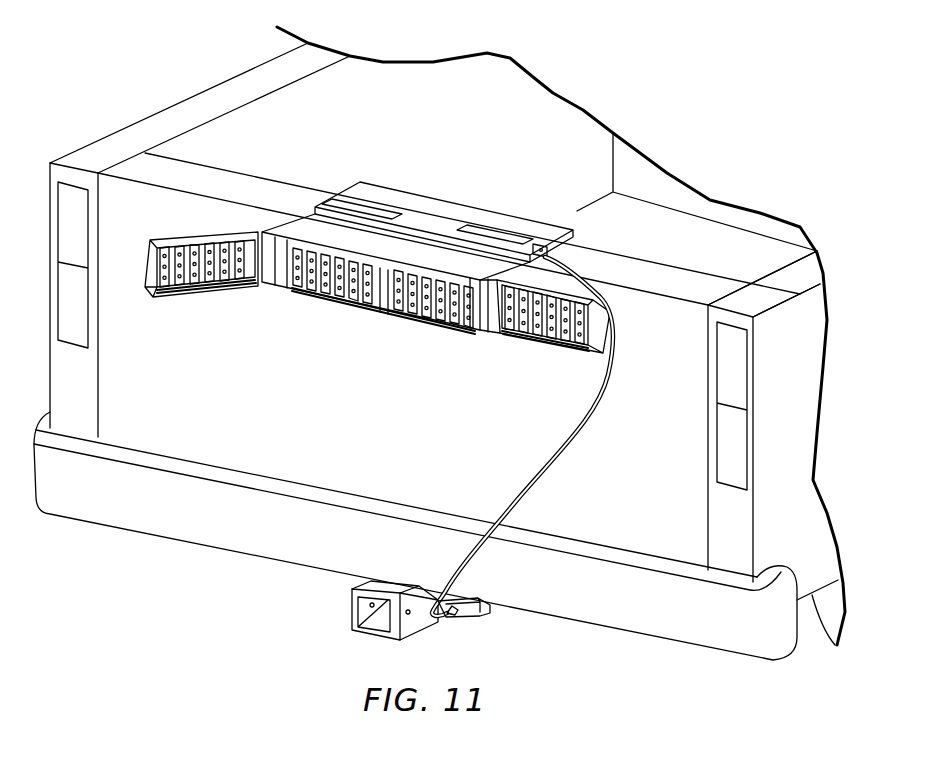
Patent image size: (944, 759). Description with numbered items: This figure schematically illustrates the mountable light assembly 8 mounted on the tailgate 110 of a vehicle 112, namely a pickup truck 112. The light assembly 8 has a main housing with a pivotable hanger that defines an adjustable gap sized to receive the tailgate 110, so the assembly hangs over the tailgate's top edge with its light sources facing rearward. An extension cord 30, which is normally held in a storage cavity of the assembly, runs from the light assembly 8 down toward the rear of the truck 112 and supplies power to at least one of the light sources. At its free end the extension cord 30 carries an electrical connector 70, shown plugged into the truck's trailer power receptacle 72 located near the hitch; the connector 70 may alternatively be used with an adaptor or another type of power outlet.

The mountable light assembly 8 is at (438, 181).
The extension cord 30 is at (548, 482).
The electrical connector 70 is at (454, 613).
The trailer power receptacle 72 is at (482, 609).
The tailgate 110 is at (263, 423).
The vehicle 112 is at (780, 284).